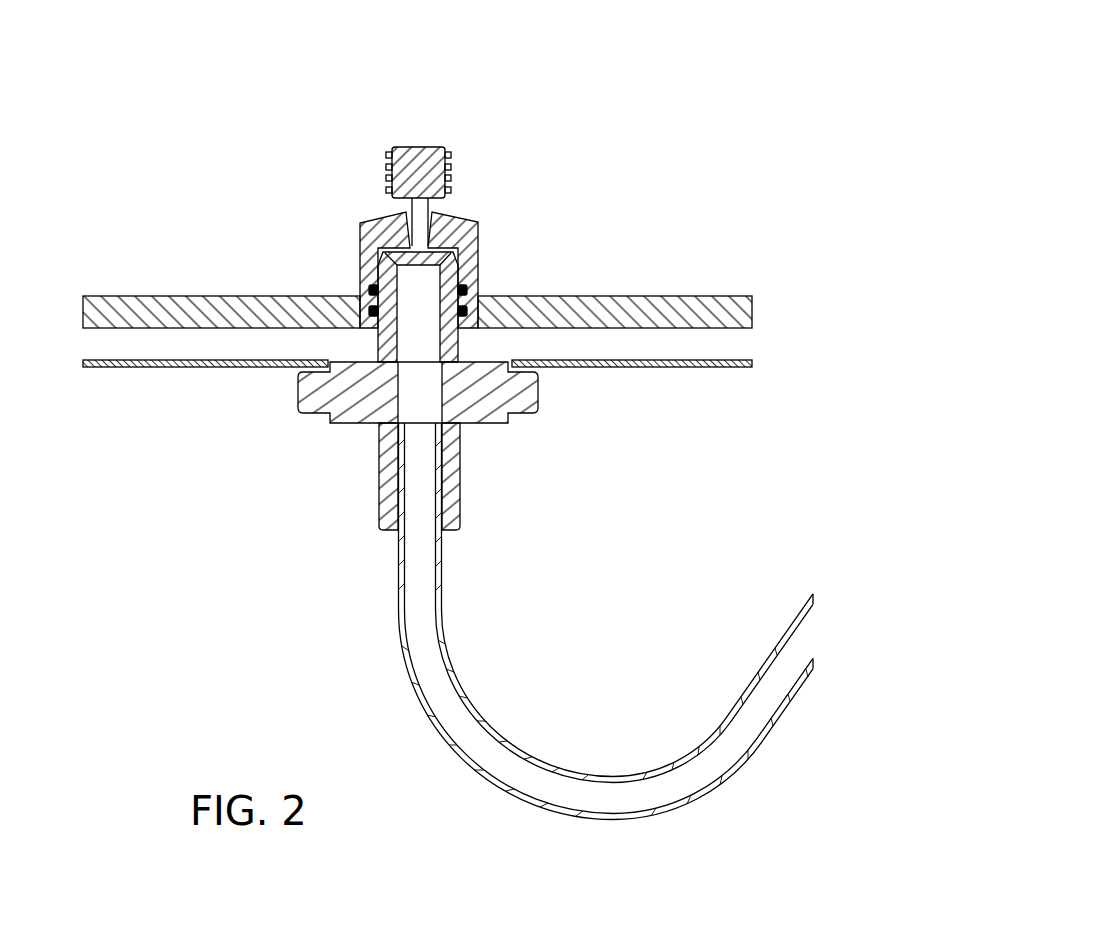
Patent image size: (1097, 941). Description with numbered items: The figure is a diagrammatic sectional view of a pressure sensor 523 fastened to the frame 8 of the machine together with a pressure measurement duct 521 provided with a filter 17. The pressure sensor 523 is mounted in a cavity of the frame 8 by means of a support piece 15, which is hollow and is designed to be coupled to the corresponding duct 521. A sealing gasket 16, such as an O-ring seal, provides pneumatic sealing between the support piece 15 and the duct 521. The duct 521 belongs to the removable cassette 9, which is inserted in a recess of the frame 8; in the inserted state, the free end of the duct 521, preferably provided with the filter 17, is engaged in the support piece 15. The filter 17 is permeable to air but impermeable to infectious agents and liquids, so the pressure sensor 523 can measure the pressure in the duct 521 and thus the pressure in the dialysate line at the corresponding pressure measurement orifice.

The frame 8 is at (168, 298).
The cassette 9 is at (158, 367).
The support piece 15 is at (474, 222).
The sealing gasket 16 is at (478, 295).
The filter 17 is at (488, 405).
The duct 521 is at (489, 729).
The pressure sensor 523 is at (434, 148).